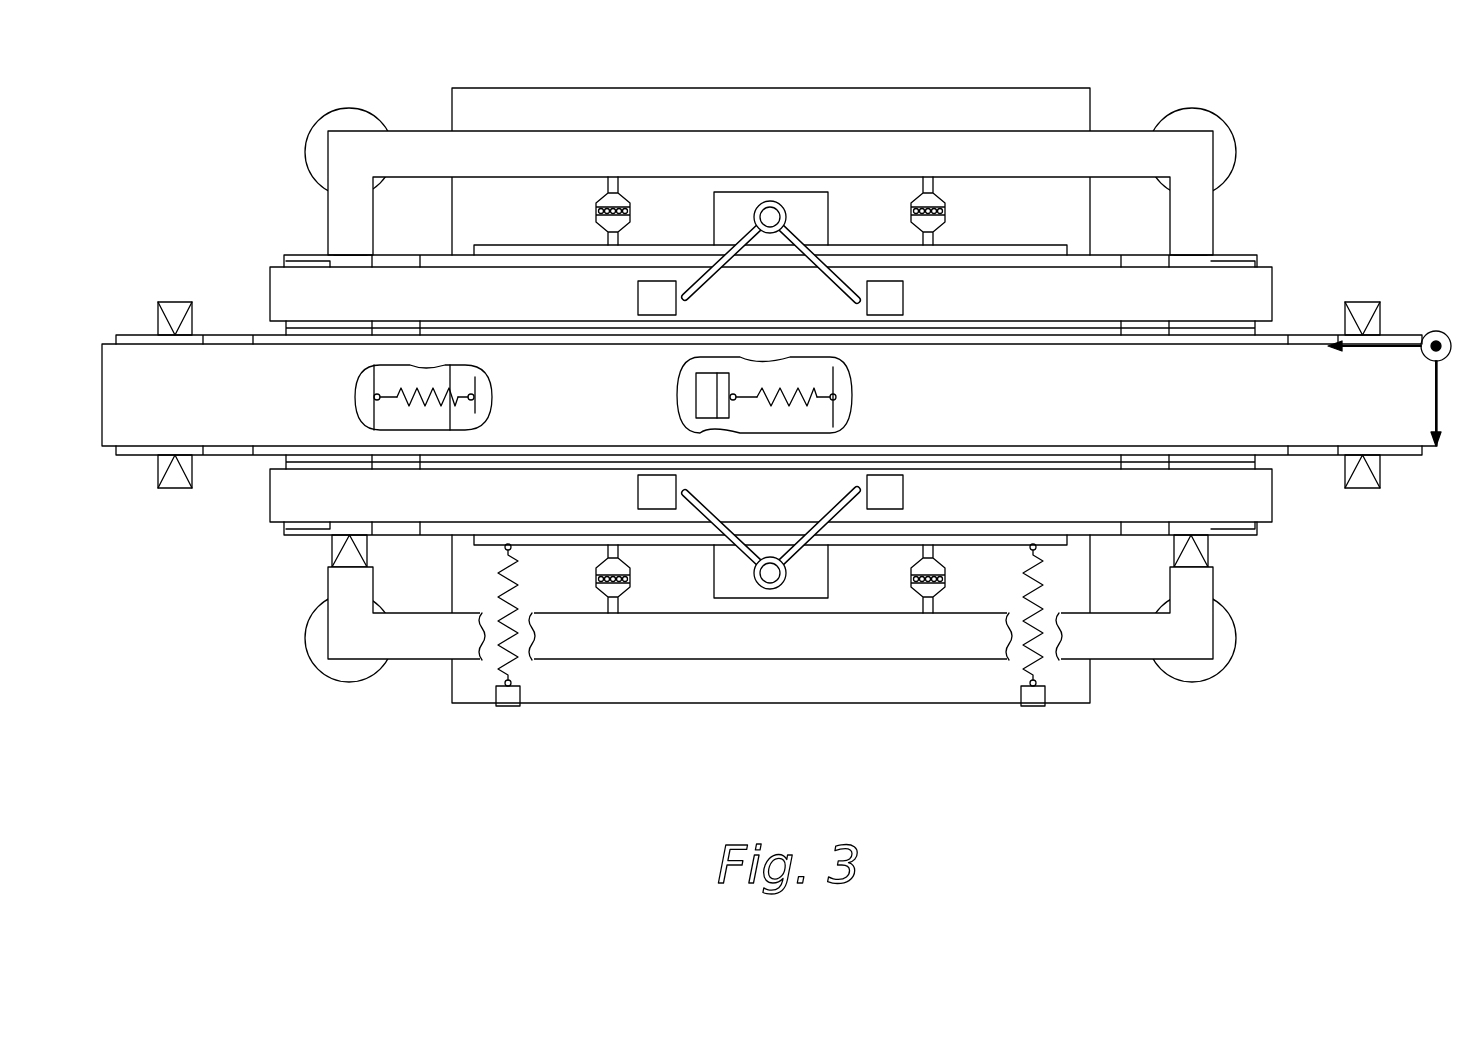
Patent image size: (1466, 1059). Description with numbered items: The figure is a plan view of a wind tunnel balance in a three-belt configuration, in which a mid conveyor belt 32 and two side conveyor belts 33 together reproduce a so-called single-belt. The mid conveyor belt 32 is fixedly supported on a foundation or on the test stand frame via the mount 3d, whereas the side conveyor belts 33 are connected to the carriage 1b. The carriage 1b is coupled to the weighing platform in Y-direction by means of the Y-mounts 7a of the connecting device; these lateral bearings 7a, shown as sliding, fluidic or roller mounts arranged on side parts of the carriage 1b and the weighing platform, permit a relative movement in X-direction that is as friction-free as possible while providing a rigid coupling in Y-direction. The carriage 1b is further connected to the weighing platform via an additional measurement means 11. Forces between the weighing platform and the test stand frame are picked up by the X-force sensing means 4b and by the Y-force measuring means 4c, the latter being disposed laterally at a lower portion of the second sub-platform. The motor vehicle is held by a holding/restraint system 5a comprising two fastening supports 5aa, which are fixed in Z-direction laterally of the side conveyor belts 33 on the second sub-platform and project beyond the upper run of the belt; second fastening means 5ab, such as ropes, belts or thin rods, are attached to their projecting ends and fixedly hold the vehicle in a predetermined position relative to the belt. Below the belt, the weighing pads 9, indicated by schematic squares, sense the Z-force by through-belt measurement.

The carriage 1b is at (1130, 148).
The mount 3d is at (1367, 310).
The X-force sensing means 4b is at (820, 412).
The Y-force measuring means 4c is at (498, 660).
The holding/restraint system 5a is at (769, 600).
The fastening supports 5aa is at (770, 201).
The second fastening means 5ab is at (737, 250).
The Y-mount 7a is at (605, 198).
The weighing pads 9 is at (658, 290).
The additional measurement means 11 is at (415, 405).
The mid conveyor belt 32 is at (1289, 417).
The side conveyor belts 33 is at (1256, 301).